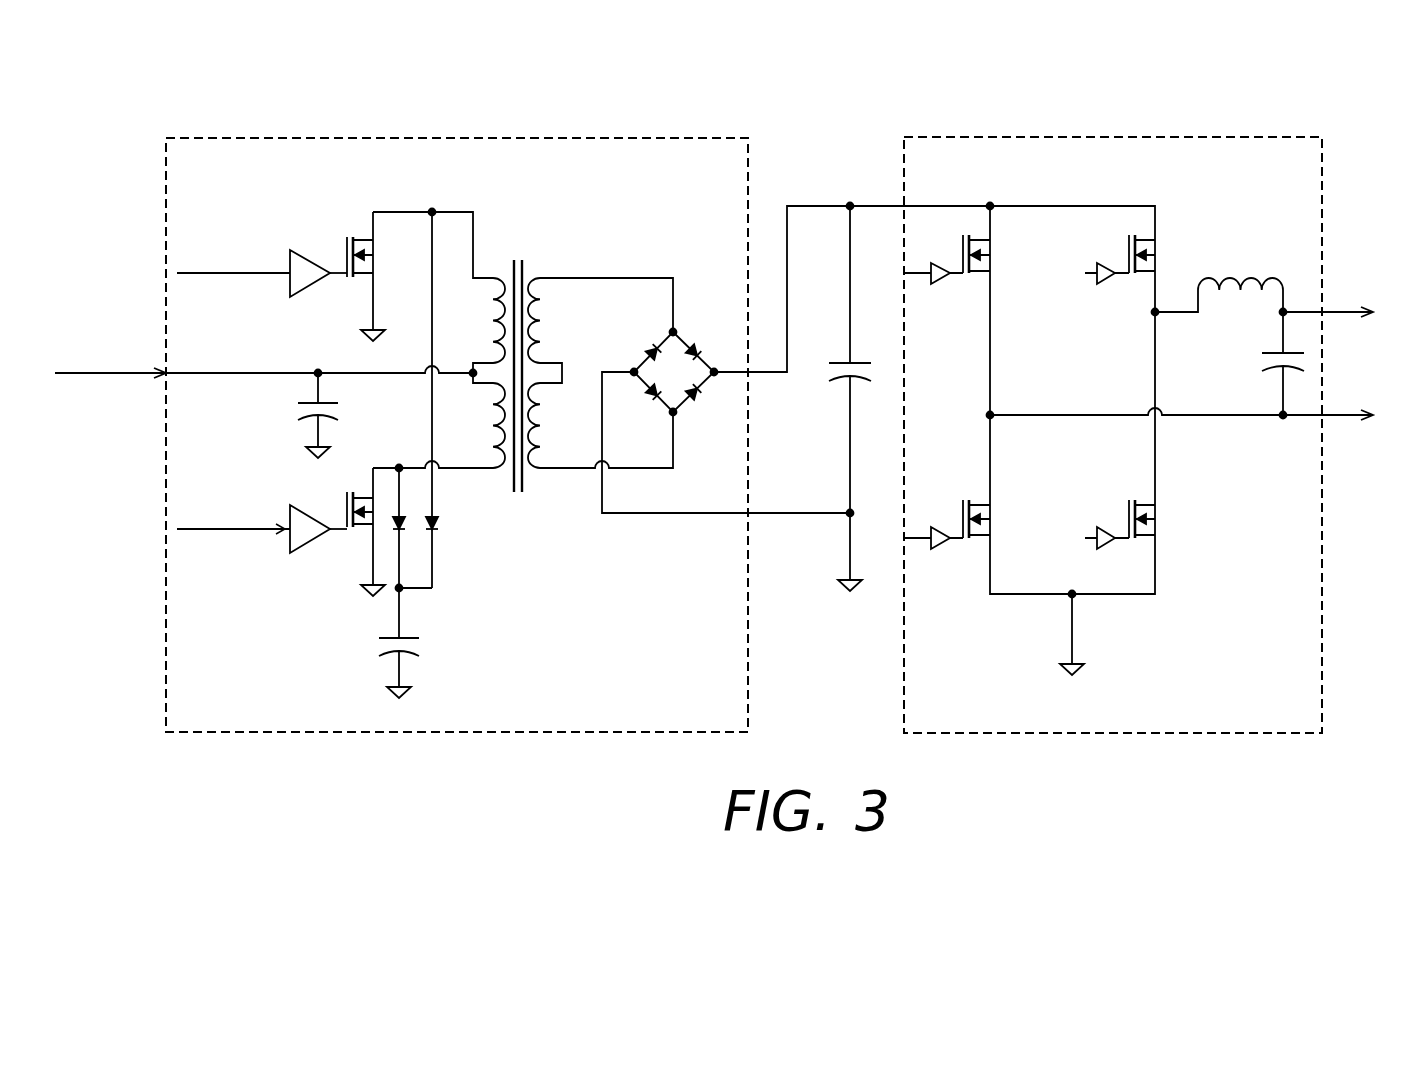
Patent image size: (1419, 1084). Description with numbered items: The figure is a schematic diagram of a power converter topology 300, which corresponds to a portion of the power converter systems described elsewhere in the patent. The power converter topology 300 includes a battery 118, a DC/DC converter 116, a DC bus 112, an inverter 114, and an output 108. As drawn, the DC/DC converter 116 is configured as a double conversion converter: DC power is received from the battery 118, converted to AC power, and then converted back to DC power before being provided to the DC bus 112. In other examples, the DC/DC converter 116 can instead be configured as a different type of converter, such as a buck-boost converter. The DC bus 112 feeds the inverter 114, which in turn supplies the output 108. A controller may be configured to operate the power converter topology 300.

The power converter topology 300 is at (1062, 90).
The DC/DC converter 116 is at (423, 138).
The inverter 114 is at (1233, 137).
The DC bus 112 is at (832, 206).
The battery 118 is at (117, 373).
The output 108 is at (1342, 317).